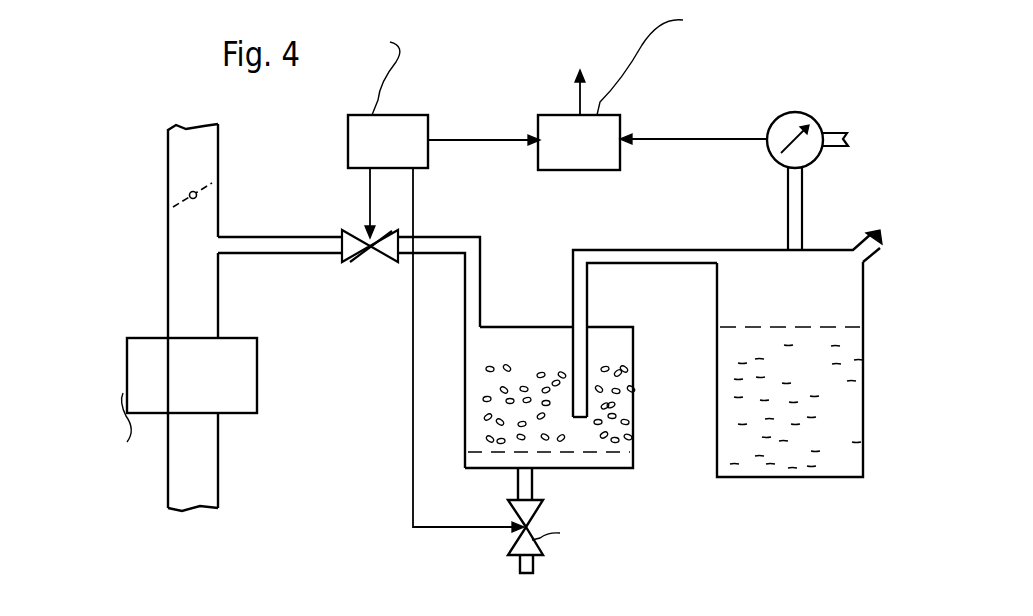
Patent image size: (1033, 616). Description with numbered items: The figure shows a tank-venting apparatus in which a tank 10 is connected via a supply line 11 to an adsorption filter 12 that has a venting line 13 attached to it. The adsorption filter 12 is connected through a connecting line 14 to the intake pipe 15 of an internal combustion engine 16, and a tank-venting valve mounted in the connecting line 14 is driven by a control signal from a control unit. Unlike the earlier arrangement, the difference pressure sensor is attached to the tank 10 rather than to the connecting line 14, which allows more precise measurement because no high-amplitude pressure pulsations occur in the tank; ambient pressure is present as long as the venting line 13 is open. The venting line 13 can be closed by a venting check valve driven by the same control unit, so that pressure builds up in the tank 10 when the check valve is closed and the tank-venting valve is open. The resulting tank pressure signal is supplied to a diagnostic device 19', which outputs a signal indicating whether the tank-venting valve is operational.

The tank 10 is at (857, 408).
The supply line 11 is at (643, 258).
The adsorption filter 12 is at (632, 408).
The venting line 13 is at (523, 483).
The connecting line 14 is at (321, 246).
The intake pipe 15 is at (176, 299).
The internal combustion engine 16 is at (233, 407).
The diagnostic device 19' is at (664, 85).